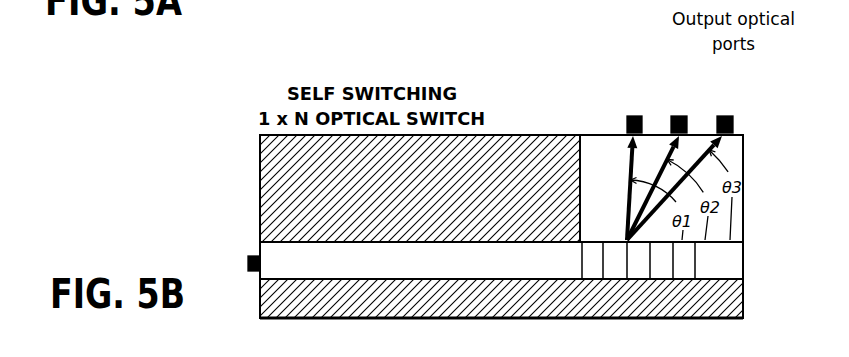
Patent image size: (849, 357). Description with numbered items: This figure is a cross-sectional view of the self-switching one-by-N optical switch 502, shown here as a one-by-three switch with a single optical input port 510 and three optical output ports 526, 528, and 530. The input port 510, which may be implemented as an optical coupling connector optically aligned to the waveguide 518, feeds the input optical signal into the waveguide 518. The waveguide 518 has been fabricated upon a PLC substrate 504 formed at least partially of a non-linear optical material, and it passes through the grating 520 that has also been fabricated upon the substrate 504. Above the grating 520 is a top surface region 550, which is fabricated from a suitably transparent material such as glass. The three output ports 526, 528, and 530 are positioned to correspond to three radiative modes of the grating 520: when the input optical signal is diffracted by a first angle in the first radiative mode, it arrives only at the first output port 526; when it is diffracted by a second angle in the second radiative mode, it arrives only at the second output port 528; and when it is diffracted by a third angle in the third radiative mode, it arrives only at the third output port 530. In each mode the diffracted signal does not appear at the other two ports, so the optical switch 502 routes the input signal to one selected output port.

The 1×N optical switch 502 is at (797, 183).
The PLC substrate 504 is at (263, 183).
The optical input port 510 is at (245, 263).
The waveguide 518 is at (467, 257).
The grating 520 is at (592, 283).
The first output port 526 is at (634, 114).
The second output port 528 is at (680, 114).
The third output port 530 is at (725, 114).
The top surface region 550 is at (588, 178).